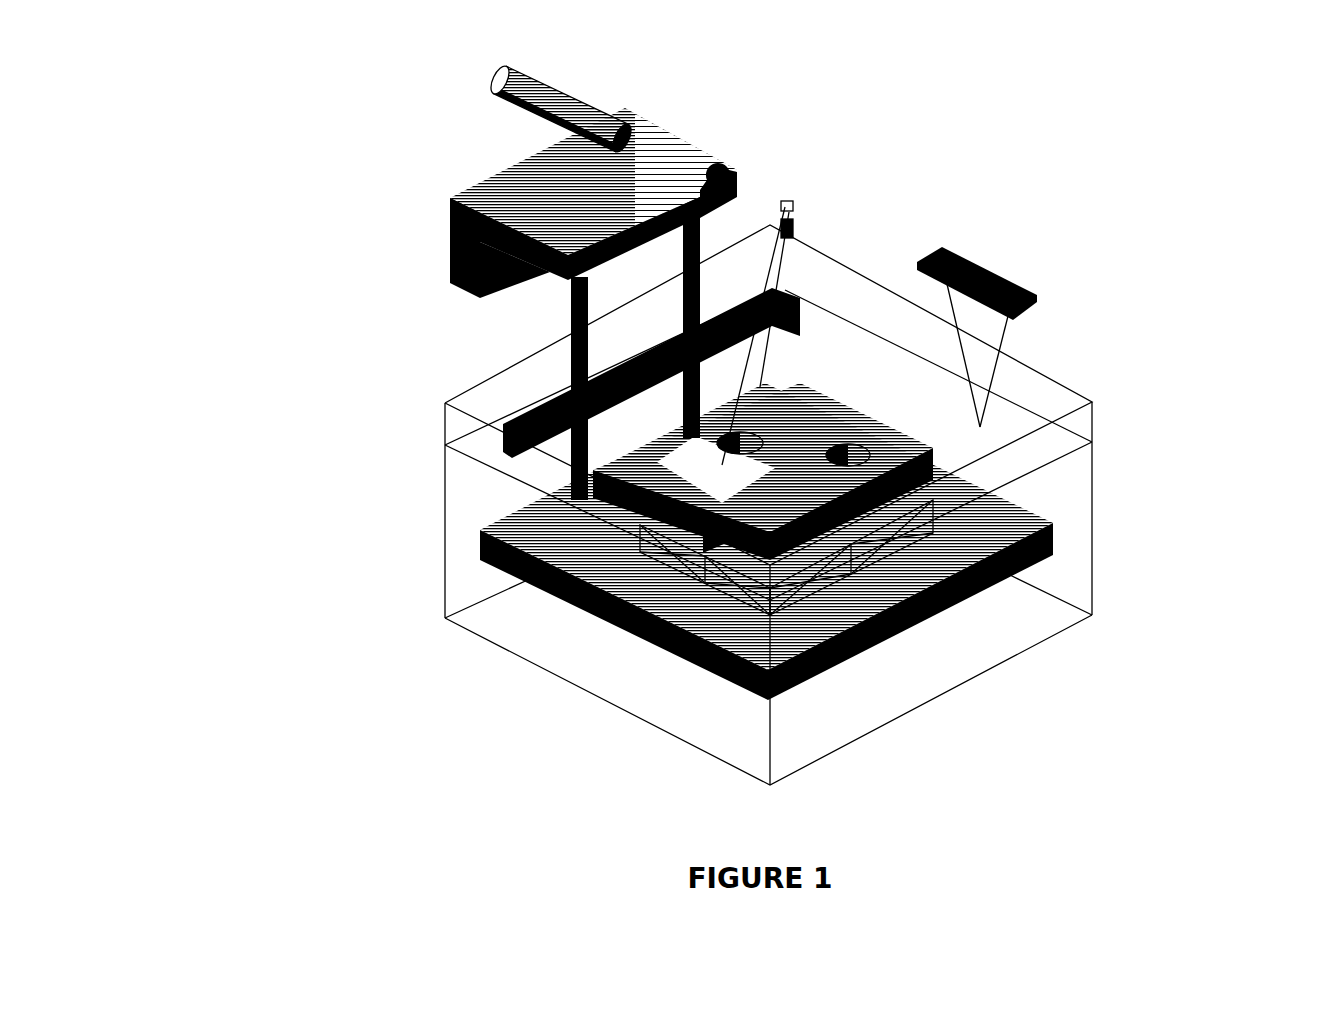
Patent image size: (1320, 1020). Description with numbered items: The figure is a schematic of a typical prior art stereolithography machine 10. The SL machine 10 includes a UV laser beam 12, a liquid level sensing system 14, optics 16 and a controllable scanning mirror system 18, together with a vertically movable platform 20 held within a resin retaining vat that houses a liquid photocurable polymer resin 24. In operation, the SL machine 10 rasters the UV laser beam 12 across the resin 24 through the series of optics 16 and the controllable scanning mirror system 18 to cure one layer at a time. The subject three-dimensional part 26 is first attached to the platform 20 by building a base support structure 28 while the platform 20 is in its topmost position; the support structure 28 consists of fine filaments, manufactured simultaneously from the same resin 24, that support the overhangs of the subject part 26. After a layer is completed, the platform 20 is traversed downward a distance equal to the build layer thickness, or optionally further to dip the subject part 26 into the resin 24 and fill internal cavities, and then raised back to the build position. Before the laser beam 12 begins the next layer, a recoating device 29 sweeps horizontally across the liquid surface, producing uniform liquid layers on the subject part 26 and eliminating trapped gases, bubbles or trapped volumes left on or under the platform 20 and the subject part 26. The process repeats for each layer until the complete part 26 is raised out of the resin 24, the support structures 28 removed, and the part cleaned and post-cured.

The SL machine 10 is at (350, 257).
The UV laser beam 12 is at (540, 76).
The liquid level sensing system 14 is at (1000, 272).
The optics 16 is at (637, 148).
The controllable scanning mirror system 18 is at (795, 208).
The vertically movable platform 20 is at (660, 628).
The liquid photocurable polymer resin 24 is at (590, 470).
The three-dimensional part 26 is at (860, 474).
The base support structure 28 is at (777, 612).
The recoating device 29 is at (503, 440).